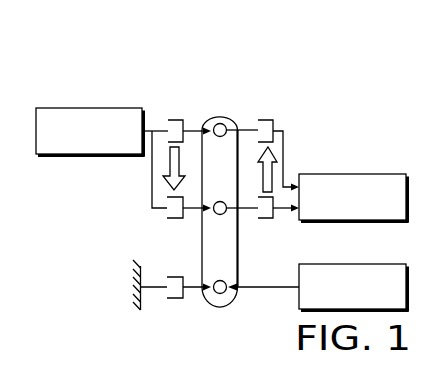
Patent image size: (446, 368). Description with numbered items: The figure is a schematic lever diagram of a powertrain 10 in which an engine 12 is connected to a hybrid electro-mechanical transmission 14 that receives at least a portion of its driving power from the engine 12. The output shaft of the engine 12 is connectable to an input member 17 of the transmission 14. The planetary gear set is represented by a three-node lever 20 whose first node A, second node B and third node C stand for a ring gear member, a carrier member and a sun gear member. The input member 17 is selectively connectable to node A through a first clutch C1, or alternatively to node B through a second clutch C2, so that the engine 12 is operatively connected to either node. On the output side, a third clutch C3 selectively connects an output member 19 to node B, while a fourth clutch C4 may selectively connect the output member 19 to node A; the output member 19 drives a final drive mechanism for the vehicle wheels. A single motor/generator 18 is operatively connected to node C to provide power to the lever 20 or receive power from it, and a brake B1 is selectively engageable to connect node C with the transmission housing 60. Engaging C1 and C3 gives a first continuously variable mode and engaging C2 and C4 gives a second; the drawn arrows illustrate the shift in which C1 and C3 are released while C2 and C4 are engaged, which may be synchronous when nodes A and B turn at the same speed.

The powertrain 10 is at (126, 55).
The engine 12 is at (82, 108).
The electro-mechanical transmission 14 is at (245, 46).
The input member 17 is at (160, 129).
The motor/generator 18 is at (353, 264).
The output member 19 is at (354, 174).
The lever 20 is at (214, 117).
The transmission housing 60 is at (140, 309).
The first clutch C1 is at (174, 100).
The second clutch C2 is at (175, 233).
The third clutch C3 is at (266, 234).
The fourth clutch C4 is at (267, 100).
The brake B1 is at (175, 314).
The first node A is at (225, 122).
The second node B is at (225, 200).
The third node C is at (221, 294).